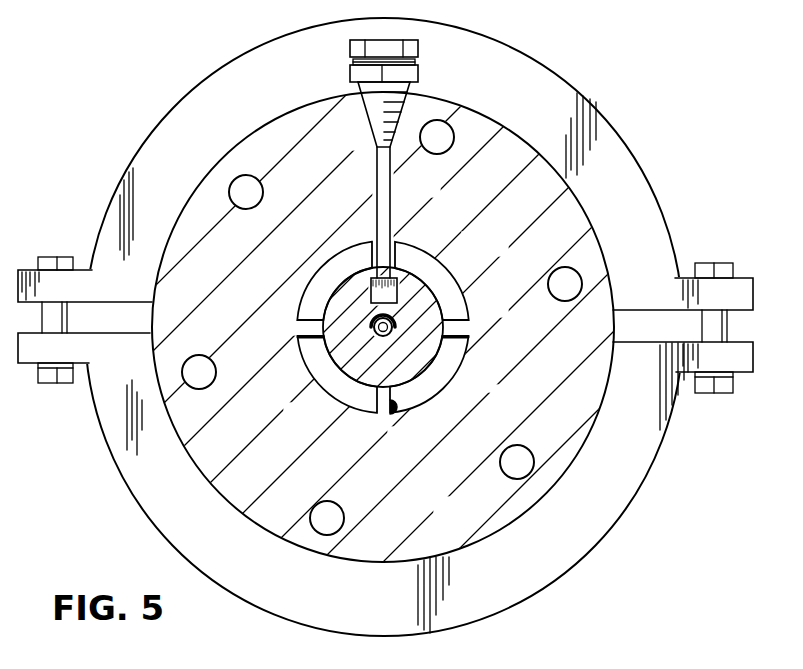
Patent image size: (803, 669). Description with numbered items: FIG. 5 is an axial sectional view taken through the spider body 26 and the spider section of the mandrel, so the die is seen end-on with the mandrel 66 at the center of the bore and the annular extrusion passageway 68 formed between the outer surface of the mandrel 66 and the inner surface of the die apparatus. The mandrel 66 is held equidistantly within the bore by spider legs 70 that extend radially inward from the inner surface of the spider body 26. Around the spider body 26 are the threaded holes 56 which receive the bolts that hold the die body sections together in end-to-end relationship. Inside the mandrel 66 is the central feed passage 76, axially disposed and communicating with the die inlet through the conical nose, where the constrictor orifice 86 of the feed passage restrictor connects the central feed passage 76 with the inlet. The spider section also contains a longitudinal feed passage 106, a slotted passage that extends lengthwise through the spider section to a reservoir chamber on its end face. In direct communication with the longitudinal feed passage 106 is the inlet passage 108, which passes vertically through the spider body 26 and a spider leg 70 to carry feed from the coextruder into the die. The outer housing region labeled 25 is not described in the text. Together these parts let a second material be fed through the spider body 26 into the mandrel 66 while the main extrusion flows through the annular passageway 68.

The housing 25 is at (660, 206).
The spider body 26 is at (522, 408).
The threaded holes 56 is at (344, 518).
The mandrel 66 is at (437, 353).
The annular extrusion passageway 68 is at (333, 386).
The spider legs 70 is at (393, 417).
The central feed passage 76 is at (391, 322).
The constrictor orifice 86 is at (374, 330).
The longitudinal feed passage 106 is at (402, 291).
The inlet passage 108 is at (392, 181).